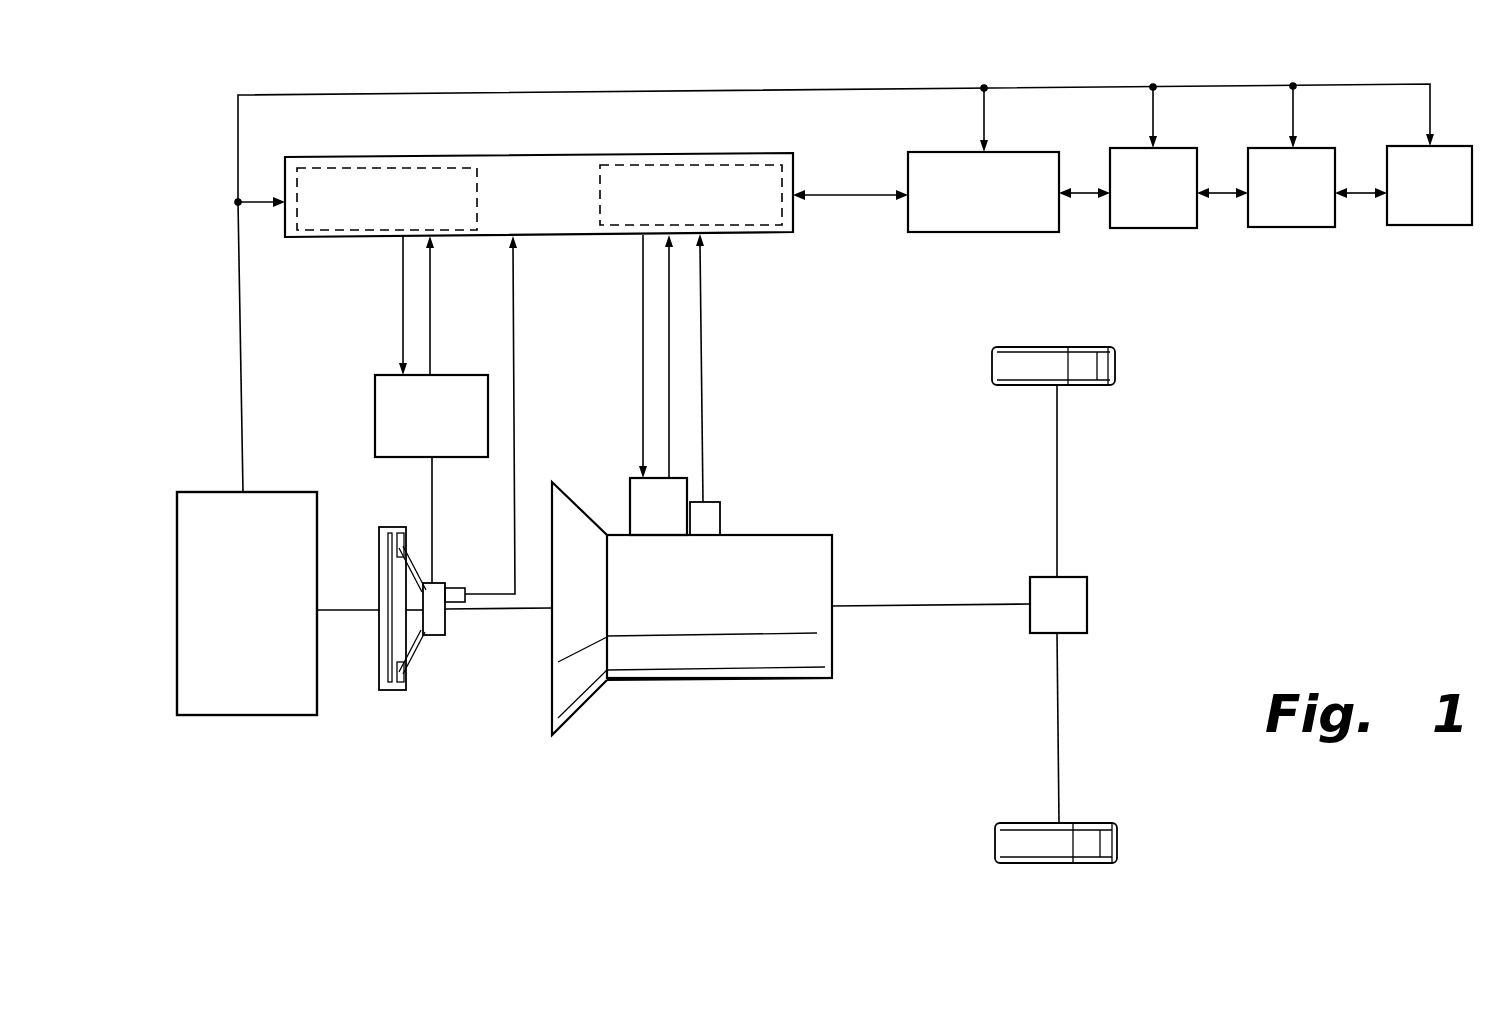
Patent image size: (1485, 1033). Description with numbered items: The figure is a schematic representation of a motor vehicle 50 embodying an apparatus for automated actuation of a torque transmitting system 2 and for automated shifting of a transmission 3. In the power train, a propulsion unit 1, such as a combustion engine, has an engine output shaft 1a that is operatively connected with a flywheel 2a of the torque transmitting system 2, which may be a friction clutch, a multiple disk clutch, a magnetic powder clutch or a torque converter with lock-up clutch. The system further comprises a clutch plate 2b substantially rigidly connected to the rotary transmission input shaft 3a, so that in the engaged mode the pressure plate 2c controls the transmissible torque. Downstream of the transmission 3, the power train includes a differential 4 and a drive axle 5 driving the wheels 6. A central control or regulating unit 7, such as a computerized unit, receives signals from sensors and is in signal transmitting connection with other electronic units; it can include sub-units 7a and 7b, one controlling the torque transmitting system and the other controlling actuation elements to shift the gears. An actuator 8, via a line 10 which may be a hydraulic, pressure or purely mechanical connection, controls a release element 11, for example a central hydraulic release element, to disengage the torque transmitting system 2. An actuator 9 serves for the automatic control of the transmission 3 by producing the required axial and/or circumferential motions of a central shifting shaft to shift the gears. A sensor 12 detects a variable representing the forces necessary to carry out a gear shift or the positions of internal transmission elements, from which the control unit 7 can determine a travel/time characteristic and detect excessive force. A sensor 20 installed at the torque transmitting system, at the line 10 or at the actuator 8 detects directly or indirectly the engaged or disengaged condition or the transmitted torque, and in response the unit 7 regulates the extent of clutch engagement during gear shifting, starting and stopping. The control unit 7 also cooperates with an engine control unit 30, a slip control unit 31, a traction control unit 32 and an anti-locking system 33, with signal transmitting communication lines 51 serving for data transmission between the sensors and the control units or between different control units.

The propulsion unit 1 is at (254, 614).
The engine output shaft 1a is at (340, 608).
The torque transmitting system 2 is at (392, 692).
The flywheel 2a is at (378, 650).
The clutch plate 2b is at (410, 640).
The pressure plate 2c is at (400, 530).
The transmission 3 is at (728, 614).
The transmission input shaft 3a is at (518, 611).
The differential 4 is at (1078, 600).
The drive axle 5 is at (1058, 450).
The wheels 6 is at (1118, 366).
The central control or regulating unit 7 is at (546, 214).
The sub-unit 7a is at (400, 214).
The sub-unit 7b is at (715, 212).
The actuator 8 is at (440, 426).
The actuator 9 is at (667, 521).
The line 10 is at (433, 488).
The release element 11 is at (436, 626).
The sensor 12 is at (718, 520).
The sensor 20 is at (458, 588).
The engine control unit 30 is at (999, 207).
The slip control unit 31 is at (1170, 204).
The traction control unit 32 is at (1309, 203).
The anti-locking system 33 is at (1446, 202).
The motor vehicle 50 is at (727, 694).
The signal transmitting communication lines 51 is at (762, 88).